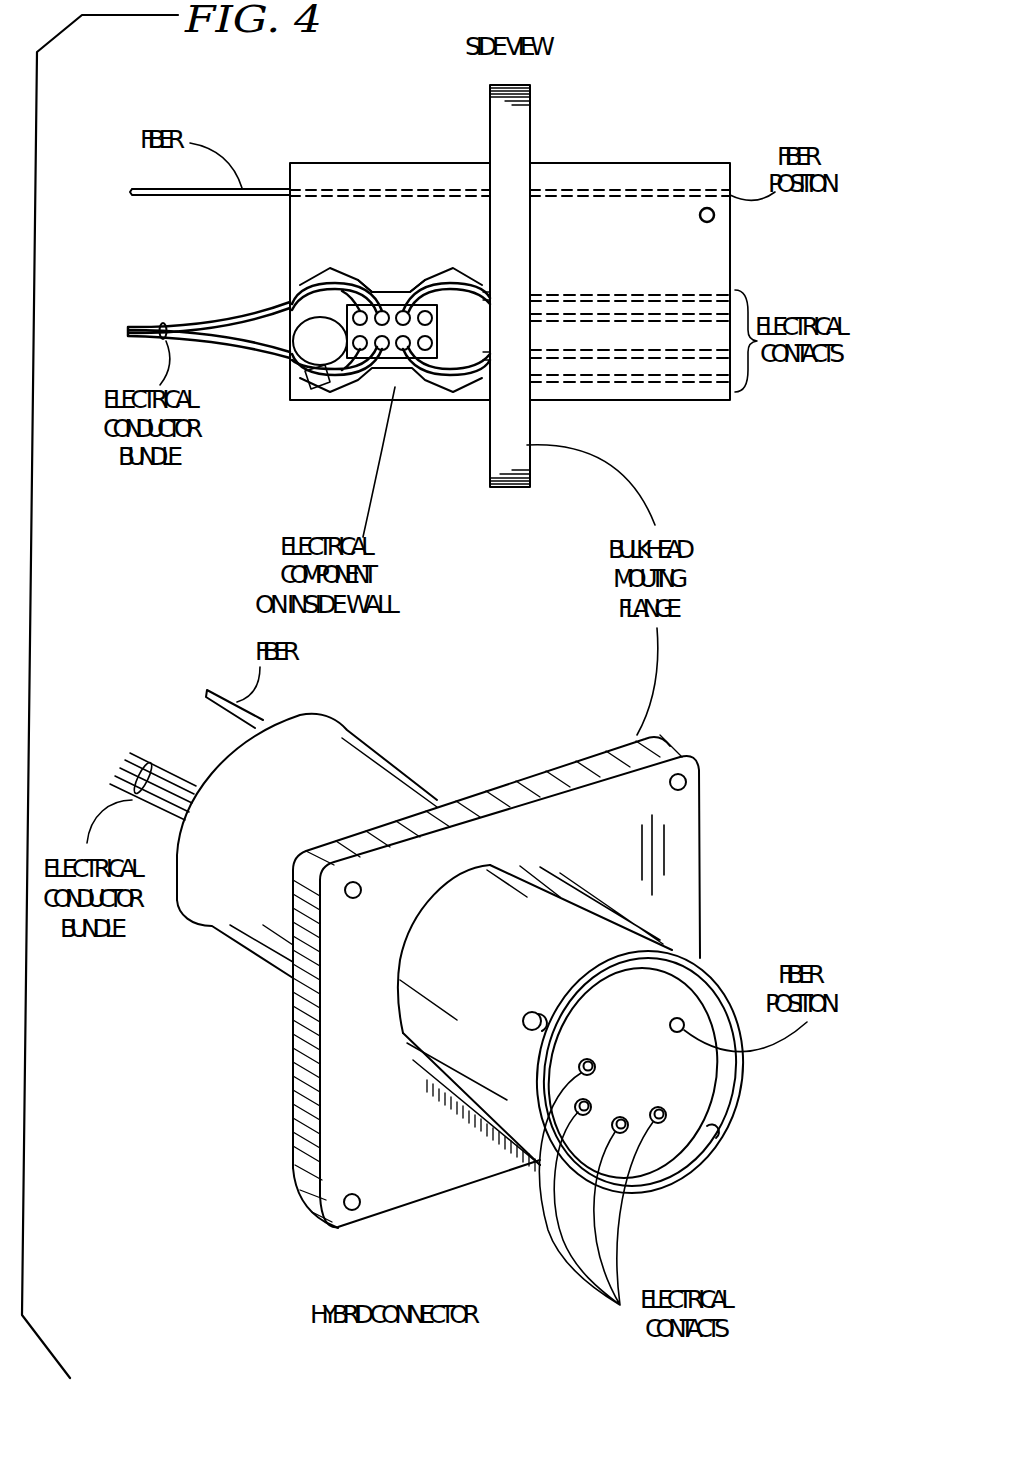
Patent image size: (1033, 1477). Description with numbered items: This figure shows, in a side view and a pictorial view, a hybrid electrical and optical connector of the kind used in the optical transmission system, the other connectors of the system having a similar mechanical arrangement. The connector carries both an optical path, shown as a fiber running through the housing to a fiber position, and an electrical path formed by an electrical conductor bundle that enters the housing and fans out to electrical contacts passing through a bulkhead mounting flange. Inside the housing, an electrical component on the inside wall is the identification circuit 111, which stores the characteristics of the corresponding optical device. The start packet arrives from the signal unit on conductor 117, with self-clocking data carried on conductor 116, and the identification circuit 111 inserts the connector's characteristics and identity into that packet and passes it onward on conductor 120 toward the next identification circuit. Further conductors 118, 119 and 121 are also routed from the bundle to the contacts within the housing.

The identification circuit 111 is at (272, 322).
The conductor 116 is at (317, 383).
The conductor 117 is at (348, 390).
The conductor 118 is at (428, 282).
The conductor 119 is at (482, 292).
The conductor 120 is at (443, 390).
The conductor 121 is at (410, 390).